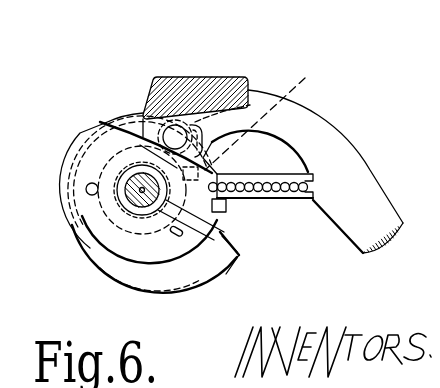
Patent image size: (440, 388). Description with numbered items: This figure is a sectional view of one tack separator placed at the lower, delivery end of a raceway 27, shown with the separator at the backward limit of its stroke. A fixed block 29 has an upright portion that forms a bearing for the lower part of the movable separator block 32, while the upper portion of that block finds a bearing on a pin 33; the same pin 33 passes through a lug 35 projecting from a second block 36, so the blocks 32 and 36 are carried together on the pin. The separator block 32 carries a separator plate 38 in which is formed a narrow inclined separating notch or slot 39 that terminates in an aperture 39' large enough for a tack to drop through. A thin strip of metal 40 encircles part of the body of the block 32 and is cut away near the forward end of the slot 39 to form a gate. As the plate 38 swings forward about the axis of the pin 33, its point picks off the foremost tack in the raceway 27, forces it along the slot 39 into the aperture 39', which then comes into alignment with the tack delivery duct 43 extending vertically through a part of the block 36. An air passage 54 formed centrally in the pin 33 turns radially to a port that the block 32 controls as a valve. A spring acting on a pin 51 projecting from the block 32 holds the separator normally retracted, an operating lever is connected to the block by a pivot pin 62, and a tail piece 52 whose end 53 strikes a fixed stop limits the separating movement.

The raceway 27 is at (316, 194).
The block 29 is at (228, 212).
The movable separator block 32 is at (133, 124).
The pin 33 is at (132, 202).
The lug 35 is at (177, 77).
The block 36 is at (218, 78).
The separator plate 38 is at (107, 132).
The separating notch or slot 39 is at (215, 243).
The aperture 39' is at (200, 274).
The thin strip of metal 40 is at (132, 252).
The tack delivery duct 43 is at (303, 108).
The pin 51 is at (86, 193).
The tail piece 52 is at (176, 277).
The end of tail piece 53 is at (233, 241).
The air passage 54 is at (134, 203).
The pivot pin 62 is at (249, 115).